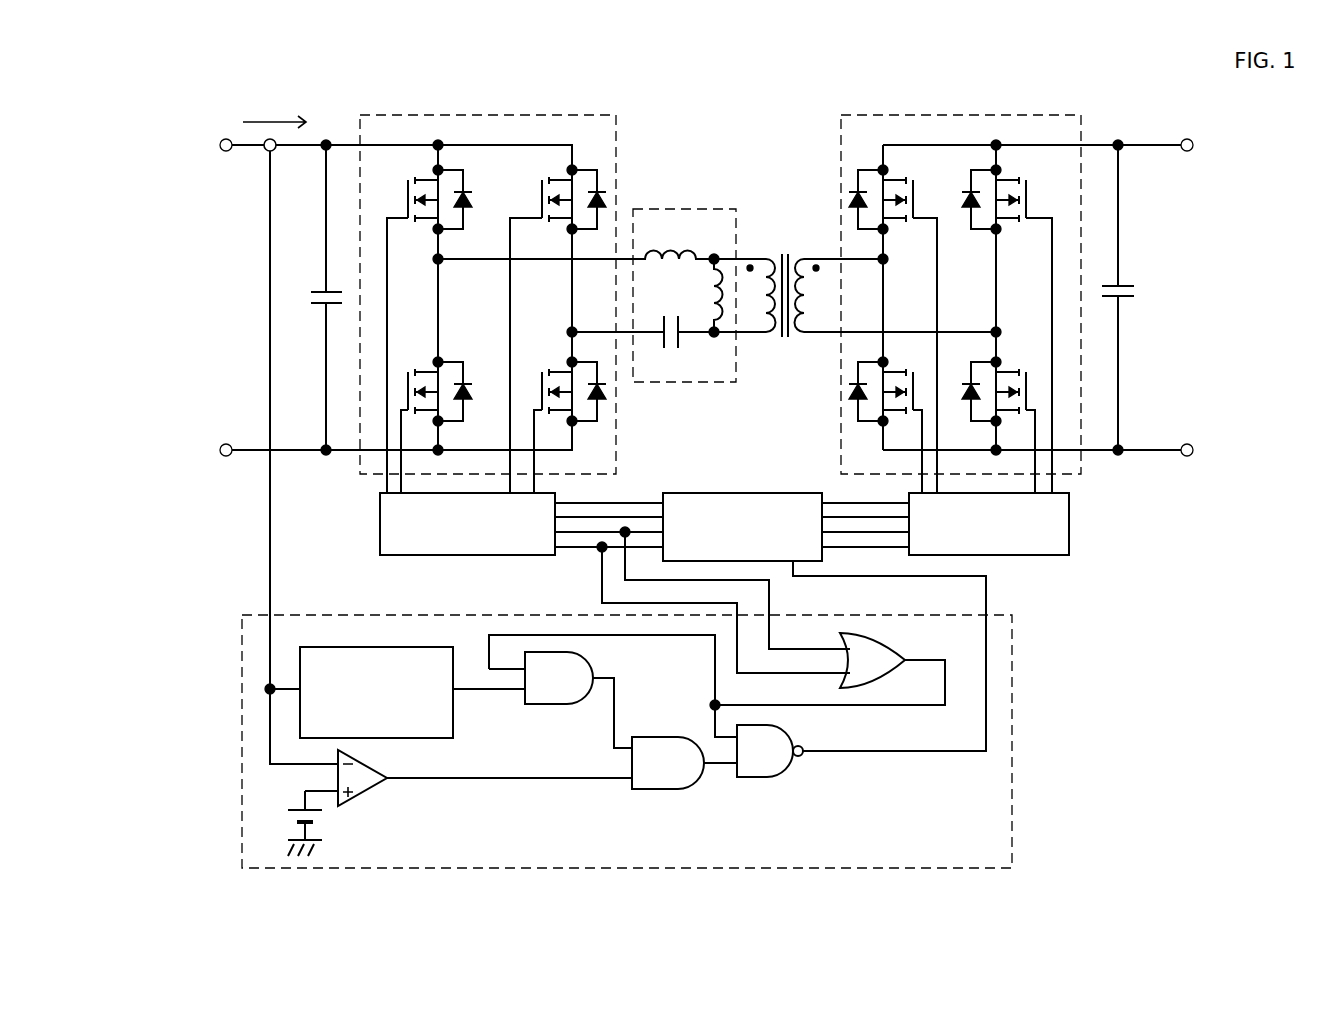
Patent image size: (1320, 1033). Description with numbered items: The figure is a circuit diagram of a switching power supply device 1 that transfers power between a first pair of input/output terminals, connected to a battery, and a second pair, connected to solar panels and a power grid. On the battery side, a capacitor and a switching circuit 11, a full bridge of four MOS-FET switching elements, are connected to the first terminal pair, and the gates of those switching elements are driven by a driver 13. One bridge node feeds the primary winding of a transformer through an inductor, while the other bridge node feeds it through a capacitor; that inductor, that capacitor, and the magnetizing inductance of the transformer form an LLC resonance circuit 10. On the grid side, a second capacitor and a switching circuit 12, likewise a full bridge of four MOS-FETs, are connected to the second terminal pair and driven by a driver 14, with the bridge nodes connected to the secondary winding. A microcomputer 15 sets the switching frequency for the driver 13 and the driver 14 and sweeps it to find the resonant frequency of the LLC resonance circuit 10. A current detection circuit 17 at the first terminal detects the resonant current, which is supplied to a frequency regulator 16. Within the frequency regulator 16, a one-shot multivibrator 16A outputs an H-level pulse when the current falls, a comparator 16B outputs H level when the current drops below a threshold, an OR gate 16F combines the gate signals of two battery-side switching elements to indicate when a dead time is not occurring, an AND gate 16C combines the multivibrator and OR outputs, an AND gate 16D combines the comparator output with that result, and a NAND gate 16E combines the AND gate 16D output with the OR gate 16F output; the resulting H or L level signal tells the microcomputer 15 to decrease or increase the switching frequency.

The switching power supply device 1 is at (740, 113).
The LLC resonance circuit 10 is at (726, 208).
The switching circuit 11 is at (360, 114).
The switching circuit 12 is at (846, 115).
The driver 13 is at (380, 556).
The driver 14 is at (1066, 556).
The microcomputer 15 is at (744, 492).
The frequency regulator 16 is at (243, 615).
The one-shot multivibrator 16A is at (350, 647).
The comparator 16B is at (364, 797).
The AND gate 16C is at (525, 704).
The AND gate 16D is at (645, 790).
The NAND gate 16E is at (763, 778).
The OR gate 16F is at (887, 634).
The current detection circuit 17 is at (282, 167).